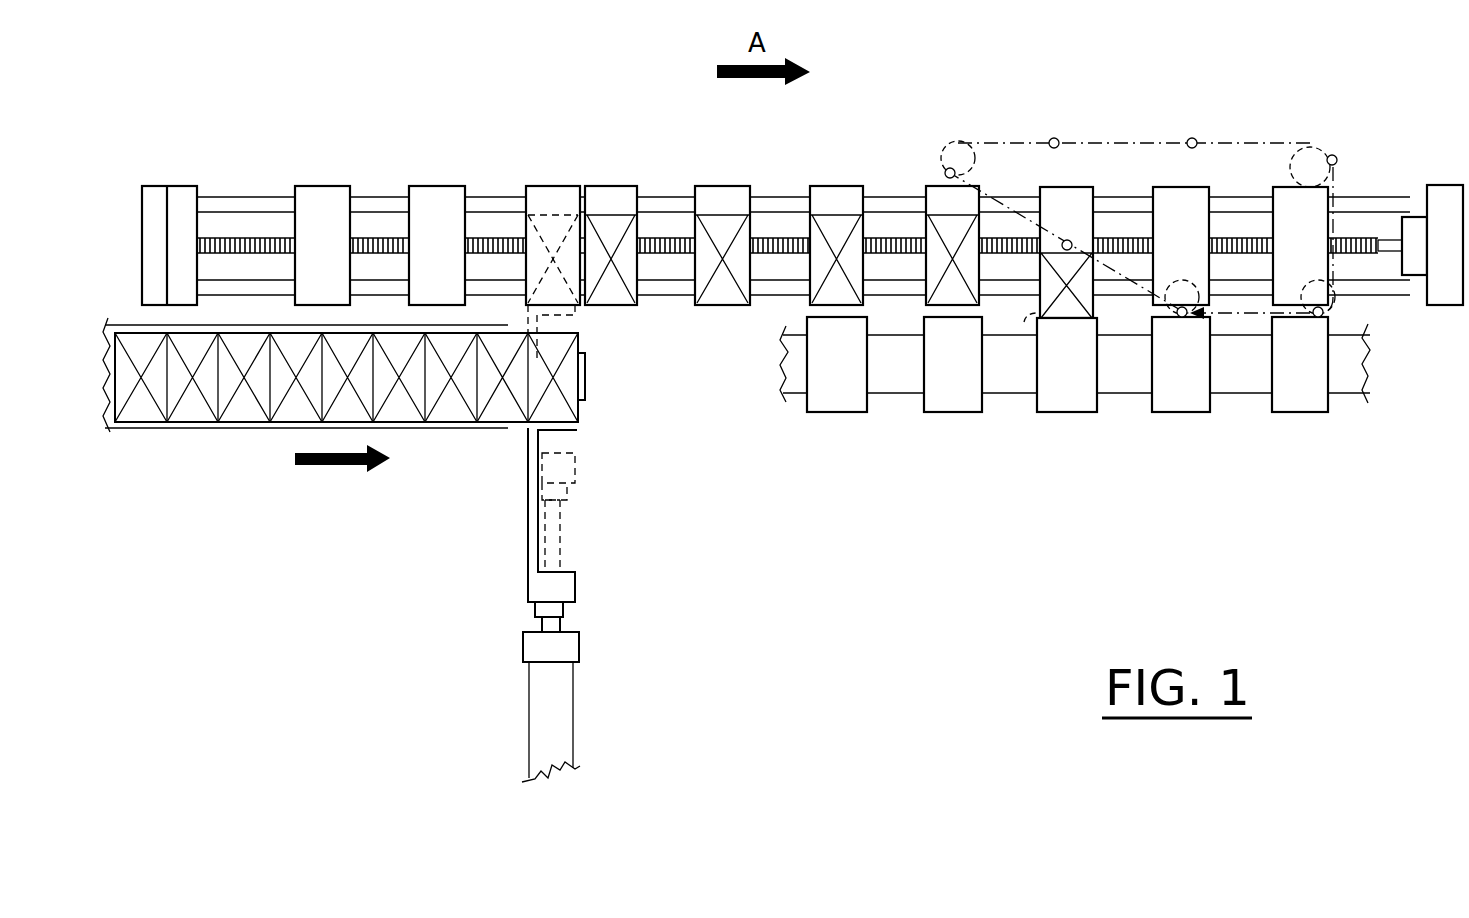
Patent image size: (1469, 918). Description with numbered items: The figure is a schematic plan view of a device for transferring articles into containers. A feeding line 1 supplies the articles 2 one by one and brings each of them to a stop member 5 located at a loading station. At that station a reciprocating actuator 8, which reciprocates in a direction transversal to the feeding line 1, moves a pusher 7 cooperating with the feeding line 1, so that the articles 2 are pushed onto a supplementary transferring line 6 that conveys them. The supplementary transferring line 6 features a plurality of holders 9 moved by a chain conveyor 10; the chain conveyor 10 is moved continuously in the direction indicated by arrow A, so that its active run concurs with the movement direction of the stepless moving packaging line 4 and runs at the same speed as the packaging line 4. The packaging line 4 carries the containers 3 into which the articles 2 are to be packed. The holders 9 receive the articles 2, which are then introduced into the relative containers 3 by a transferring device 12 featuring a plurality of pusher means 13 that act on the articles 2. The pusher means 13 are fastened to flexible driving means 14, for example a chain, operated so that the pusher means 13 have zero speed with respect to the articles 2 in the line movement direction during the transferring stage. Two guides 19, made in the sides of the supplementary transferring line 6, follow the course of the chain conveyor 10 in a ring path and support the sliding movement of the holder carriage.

The feeding line 1 is at (394, 462).
The articles 2 is at (617, 297).
The containers 3 is at (957, 400).
The packaging line 4 is at (1075, 437).
The stop member 5 is at (585, 400).
The supplementary transferring line 6 is at (802, 172).
The pusher 7 is at (592, 510).
The reciprocating actuator 8 is at (563, 732).
The holders 9 is at (318, 205).
The chain conveyor 10 is at (237, 240).
The transferring device 12 is at (1139, 181).
The pusher means 13 is at (1069, 240).
The flexible driving means 14 is at (1005, 143).
The guides 19 is at (510, 290).